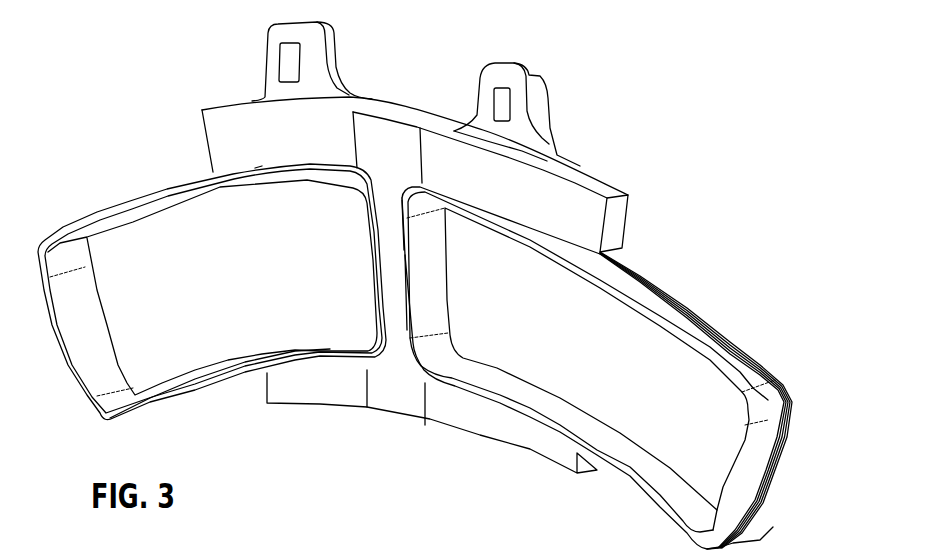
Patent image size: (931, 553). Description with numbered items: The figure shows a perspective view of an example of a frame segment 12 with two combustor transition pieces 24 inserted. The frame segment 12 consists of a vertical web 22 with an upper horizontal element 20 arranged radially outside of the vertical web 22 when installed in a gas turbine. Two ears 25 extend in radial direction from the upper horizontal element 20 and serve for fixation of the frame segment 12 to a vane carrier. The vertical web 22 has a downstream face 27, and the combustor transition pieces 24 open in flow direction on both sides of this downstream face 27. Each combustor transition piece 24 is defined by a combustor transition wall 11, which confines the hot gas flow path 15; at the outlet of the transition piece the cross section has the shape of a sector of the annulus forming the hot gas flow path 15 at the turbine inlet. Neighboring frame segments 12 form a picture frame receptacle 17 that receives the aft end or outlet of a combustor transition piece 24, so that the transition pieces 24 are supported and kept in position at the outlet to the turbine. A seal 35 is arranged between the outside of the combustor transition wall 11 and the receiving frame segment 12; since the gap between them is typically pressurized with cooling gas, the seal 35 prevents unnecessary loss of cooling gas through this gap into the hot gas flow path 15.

The combustor transition wall 11 is at (627, 280).
The frame segment 12 is at (434, 69).
The hot gas flow path 15 is at (287, 259).
The picture frame receptacle 17 is at (607, 352).
The upper horizontal element 20 is at (587, 227).
The vertical web 22 is at (400, 287).
The combustor transition piece 24 is at (128, 171).
The ears 25 is at (271, 60).
The downstream face 27 is at (460, 277).
The seal 35 is at (752, 358).